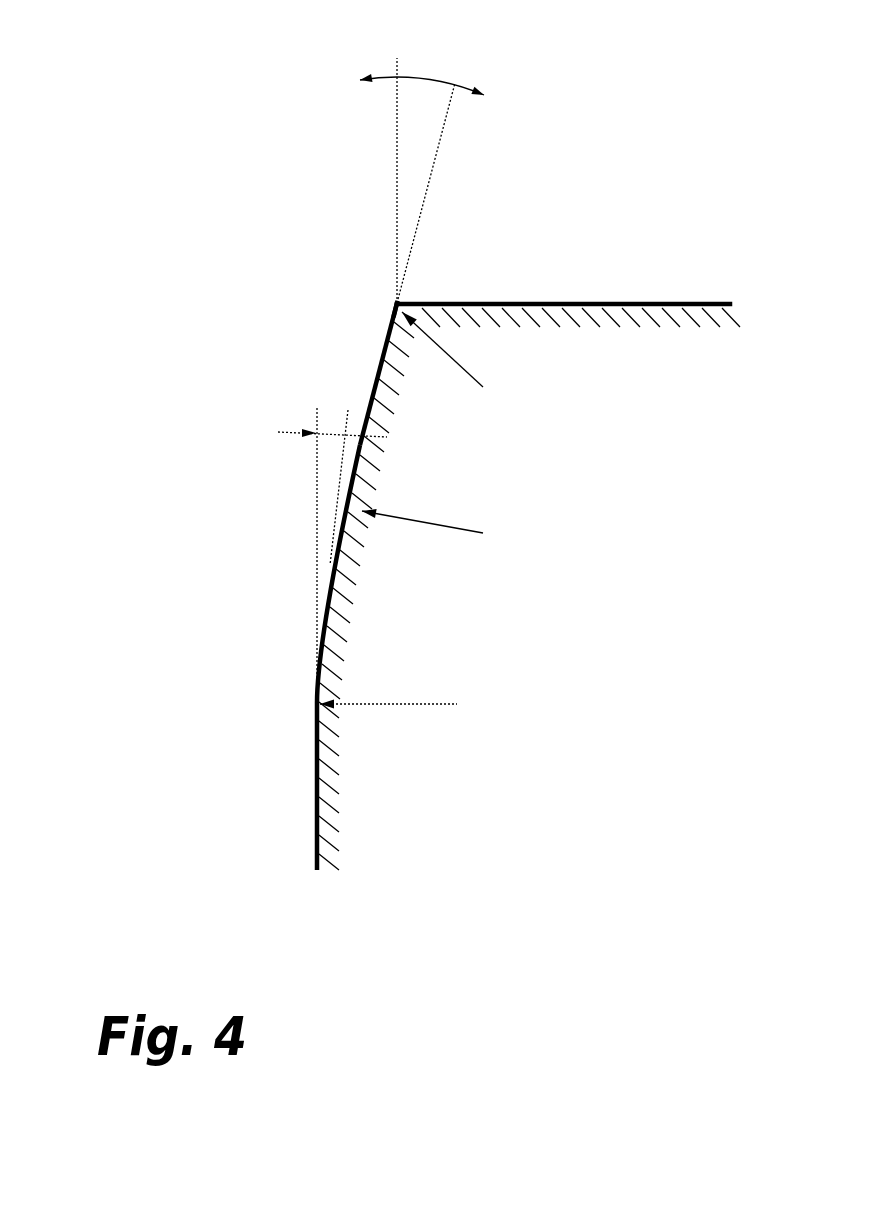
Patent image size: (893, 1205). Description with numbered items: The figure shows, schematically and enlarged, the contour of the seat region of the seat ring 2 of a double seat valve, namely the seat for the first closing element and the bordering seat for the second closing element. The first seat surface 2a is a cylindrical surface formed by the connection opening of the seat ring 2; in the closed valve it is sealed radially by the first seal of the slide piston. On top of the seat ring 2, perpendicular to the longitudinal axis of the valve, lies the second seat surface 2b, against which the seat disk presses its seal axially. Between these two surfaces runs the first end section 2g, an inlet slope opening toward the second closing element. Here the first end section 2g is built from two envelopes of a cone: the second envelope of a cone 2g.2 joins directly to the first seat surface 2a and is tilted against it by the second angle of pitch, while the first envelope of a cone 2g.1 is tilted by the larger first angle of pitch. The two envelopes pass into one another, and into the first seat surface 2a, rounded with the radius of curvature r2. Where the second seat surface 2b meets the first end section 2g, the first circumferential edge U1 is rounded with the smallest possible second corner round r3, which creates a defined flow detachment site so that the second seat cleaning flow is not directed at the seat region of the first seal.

The seat ring 2 is at (418, 445).
The first seat surface 2a is at (317, 812).
The second seat surface 2b is at (548, 300).
The first end section 2g is at (247, 439).
The first envelope of a cone 2g.1 is at (385, 337).
The second envelope of a cone 2g.2 is at (335, 557).
The first circumferential edge U1 is at (397, 303).
The radius of curvature r2 is at (401, 597).
The second corner round r3 is at (445, 349).